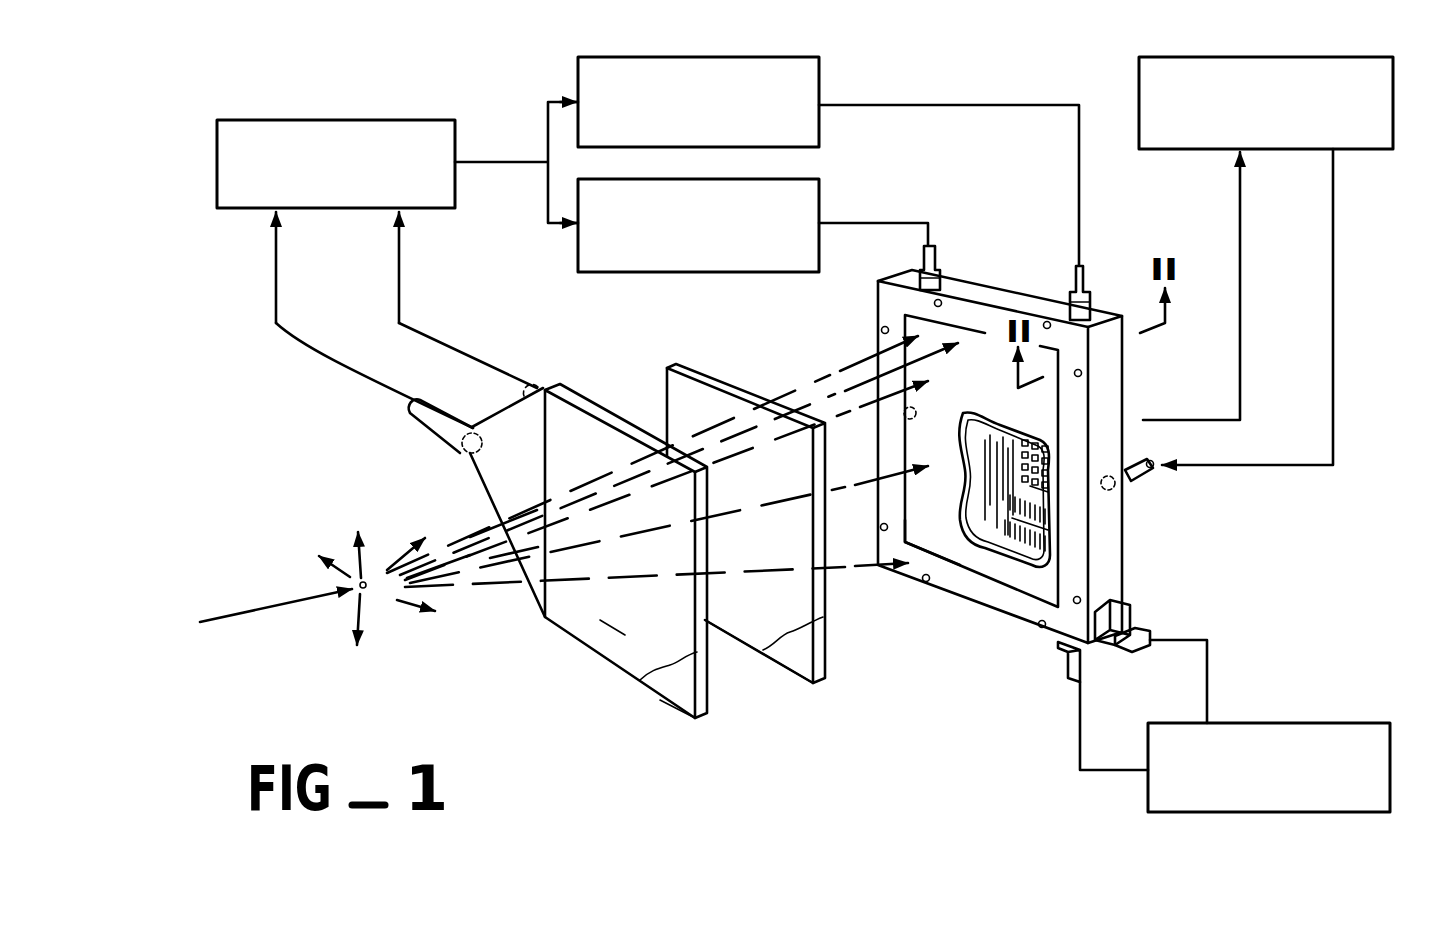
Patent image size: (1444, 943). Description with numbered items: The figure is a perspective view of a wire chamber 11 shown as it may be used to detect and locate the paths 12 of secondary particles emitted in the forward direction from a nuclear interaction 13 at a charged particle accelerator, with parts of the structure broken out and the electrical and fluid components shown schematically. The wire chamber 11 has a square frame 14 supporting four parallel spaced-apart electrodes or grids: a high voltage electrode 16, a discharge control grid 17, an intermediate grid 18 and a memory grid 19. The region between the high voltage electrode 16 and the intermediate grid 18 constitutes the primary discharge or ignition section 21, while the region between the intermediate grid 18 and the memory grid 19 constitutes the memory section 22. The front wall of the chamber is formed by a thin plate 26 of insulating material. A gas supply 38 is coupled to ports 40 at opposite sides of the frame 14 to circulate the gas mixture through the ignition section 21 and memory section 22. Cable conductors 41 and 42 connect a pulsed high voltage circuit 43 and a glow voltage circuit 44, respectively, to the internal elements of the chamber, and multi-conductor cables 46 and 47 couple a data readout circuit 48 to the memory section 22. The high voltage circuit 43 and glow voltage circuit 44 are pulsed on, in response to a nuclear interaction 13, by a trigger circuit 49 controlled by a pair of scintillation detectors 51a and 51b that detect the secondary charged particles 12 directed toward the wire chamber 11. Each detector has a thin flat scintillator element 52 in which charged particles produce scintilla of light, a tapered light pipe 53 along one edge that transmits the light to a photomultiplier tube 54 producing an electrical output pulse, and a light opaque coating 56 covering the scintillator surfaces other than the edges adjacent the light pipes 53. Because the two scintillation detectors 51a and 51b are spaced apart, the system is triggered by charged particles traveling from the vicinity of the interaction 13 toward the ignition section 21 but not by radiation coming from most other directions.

The wire chamber 11 is at (873, 708).
The paths of secondary particles 12 is at (810, 383).
The nuclear interaction 13 is at (368, 590).
The square frame 14 is at (872, 306).
The high voltage electrode 16 is at (967, 450).
The discharge control grid 17 is at (988, 428).
The intermediate grid 18 is at (1000, 427).
The memory grid 19 is at (1030, 452).
The ignition section 21 is at (1014, 519).
The memory section 22 is at (1024, 493).
The thin plate 26 is at (943, 512).
The gas supply 38 is at (1138, 84).
The ports 40 is at (1115, 490).
The cable conductor 41 is at (940, 279).
The cable conductor 42 is at (1070, 303).
The pulsed high voltage circuit 43 is at (820, 201).
The glow voltage circuit 44 is at (820, 84).
The multi-conductor cable 46 is at (1138, 626).
The multi-conductor cable 47 is at (1082, 668).
The data readout circuit 48 is at (1333, 723).
The trigger circuit 49 is at (418, 120).
The scintillation detector 51a is at (600, 686).
The scintillation detector 51b is at (791, 683).
The scintillator element 52 is at (677, 692).
The tapered light pipe 53 is at (530, 467).
The photomultiplier tube 54 is at (433, 427).
The light opaque coating 56 is at (602, 627).